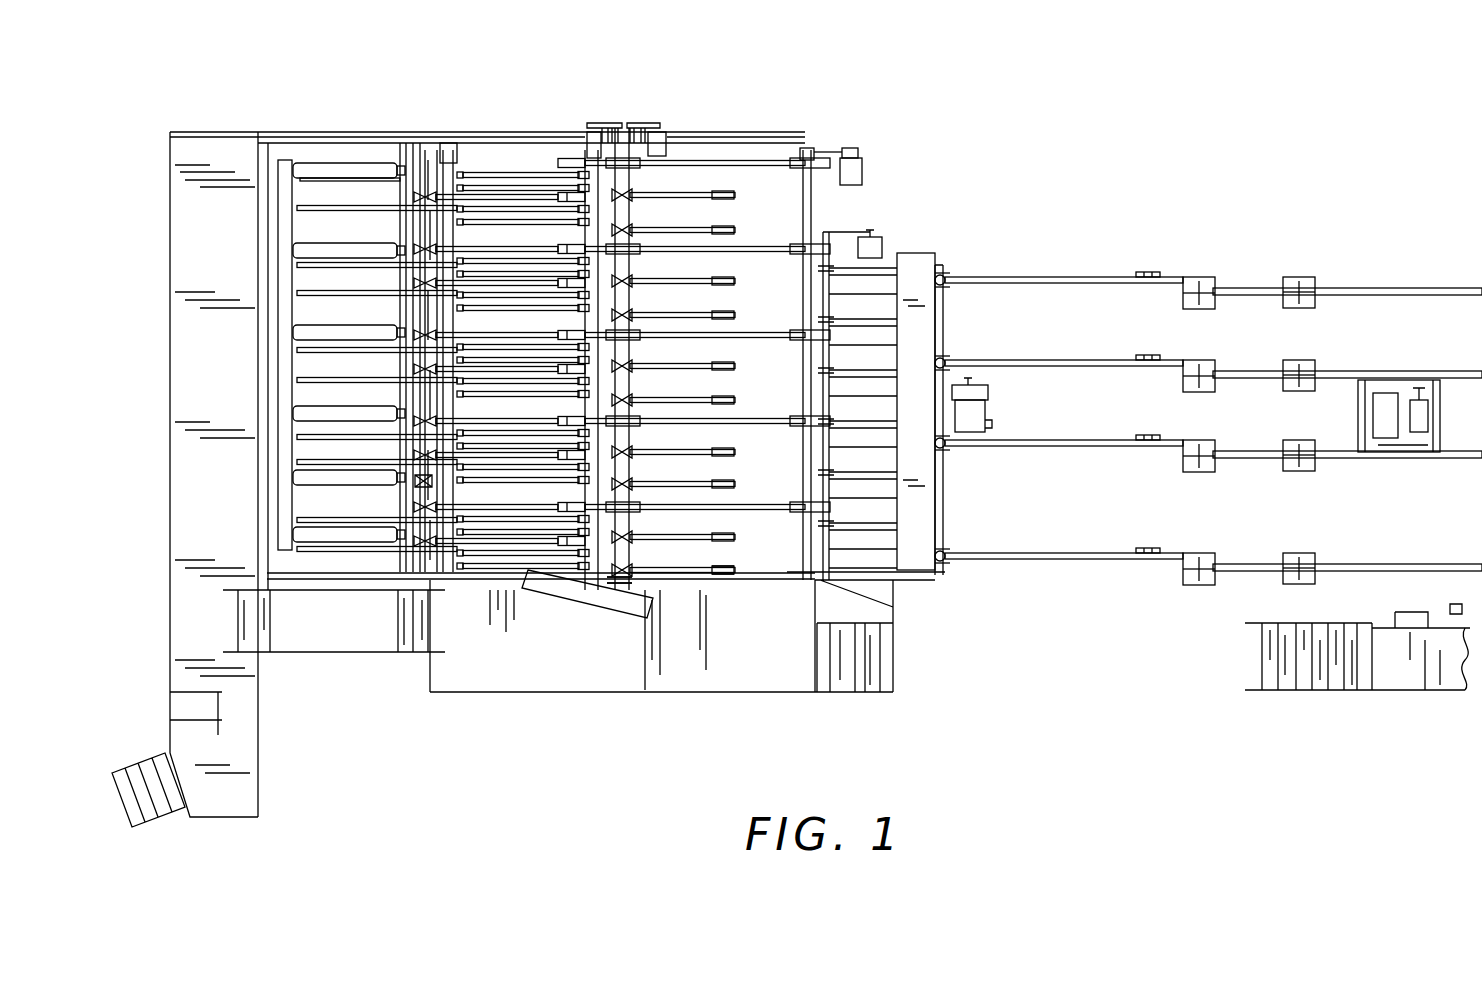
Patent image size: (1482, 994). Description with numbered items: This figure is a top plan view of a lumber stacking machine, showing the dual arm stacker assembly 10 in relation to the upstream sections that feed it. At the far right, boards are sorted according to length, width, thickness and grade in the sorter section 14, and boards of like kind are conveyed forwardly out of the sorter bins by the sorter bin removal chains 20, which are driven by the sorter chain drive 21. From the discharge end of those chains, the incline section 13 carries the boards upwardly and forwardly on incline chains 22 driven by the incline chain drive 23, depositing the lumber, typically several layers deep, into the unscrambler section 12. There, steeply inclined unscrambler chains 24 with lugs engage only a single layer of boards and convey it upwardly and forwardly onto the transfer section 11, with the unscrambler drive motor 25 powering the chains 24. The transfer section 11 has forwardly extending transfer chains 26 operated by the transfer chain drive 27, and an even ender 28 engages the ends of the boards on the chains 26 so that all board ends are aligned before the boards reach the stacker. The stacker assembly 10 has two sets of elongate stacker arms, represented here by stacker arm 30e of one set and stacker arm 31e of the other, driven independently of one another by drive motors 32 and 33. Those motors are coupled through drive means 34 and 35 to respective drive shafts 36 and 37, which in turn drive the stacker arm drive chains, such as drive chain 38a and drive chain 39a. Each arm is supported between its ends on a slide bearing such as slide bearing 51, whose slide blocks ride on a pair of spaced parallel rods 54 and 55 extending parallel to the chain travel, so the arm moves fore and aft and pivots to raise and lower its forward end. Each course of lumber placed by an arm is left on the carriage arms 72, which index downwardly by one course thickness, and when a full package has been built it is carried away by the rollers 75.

The dual arm lumber stacking assembly 10 is at (477, 604).
The transfer section 11 is at (740, 150).
The unscrambler section 12 is at (938, 588).
The incline section 13 is at (1009, 280).
The sorter section 14 is at (1356, 287).
The sorter bin removal chains 20 is at (1347, 371).
The sorter chain drive 21 is at (1388, 395).
The incline chains 22 is at (1030, 360).
The incline chain drive 23 is at (990, 400).
The unscrambler chains 24 is at (884, 315).
The unscrambler drive motor 25 is at (872, 245).
The transfer chains 26 is at (748, 165).
The transfer chain drive 27 is at (858, 176).
The even ender 28 is at (604, 606).
The stacker arm 30e is at (398, 205).
The stacker arm 31e is at (322, 178).
The drive motor 32 is at (592, 145).
The drive motor 33 is at (660, 148).
The drive means 34 is at (608, 143).
The drive means 35 is at (657, 135).
The drive shaft 36 is at (617, 148).
The drive shaft 37 is at (652, 140).
The stacker arm drive chain 38a is at (653, 575).
The stacker arm drive chain 39a is at (684, 566).
The slide bearing 51 is at (455, 118).
The rod 54 is at (486, 182).
The rod 55 is at (497, 185).
The carriage arms 72 is at (325, 550).
The rollers 75 is at (305, 415).